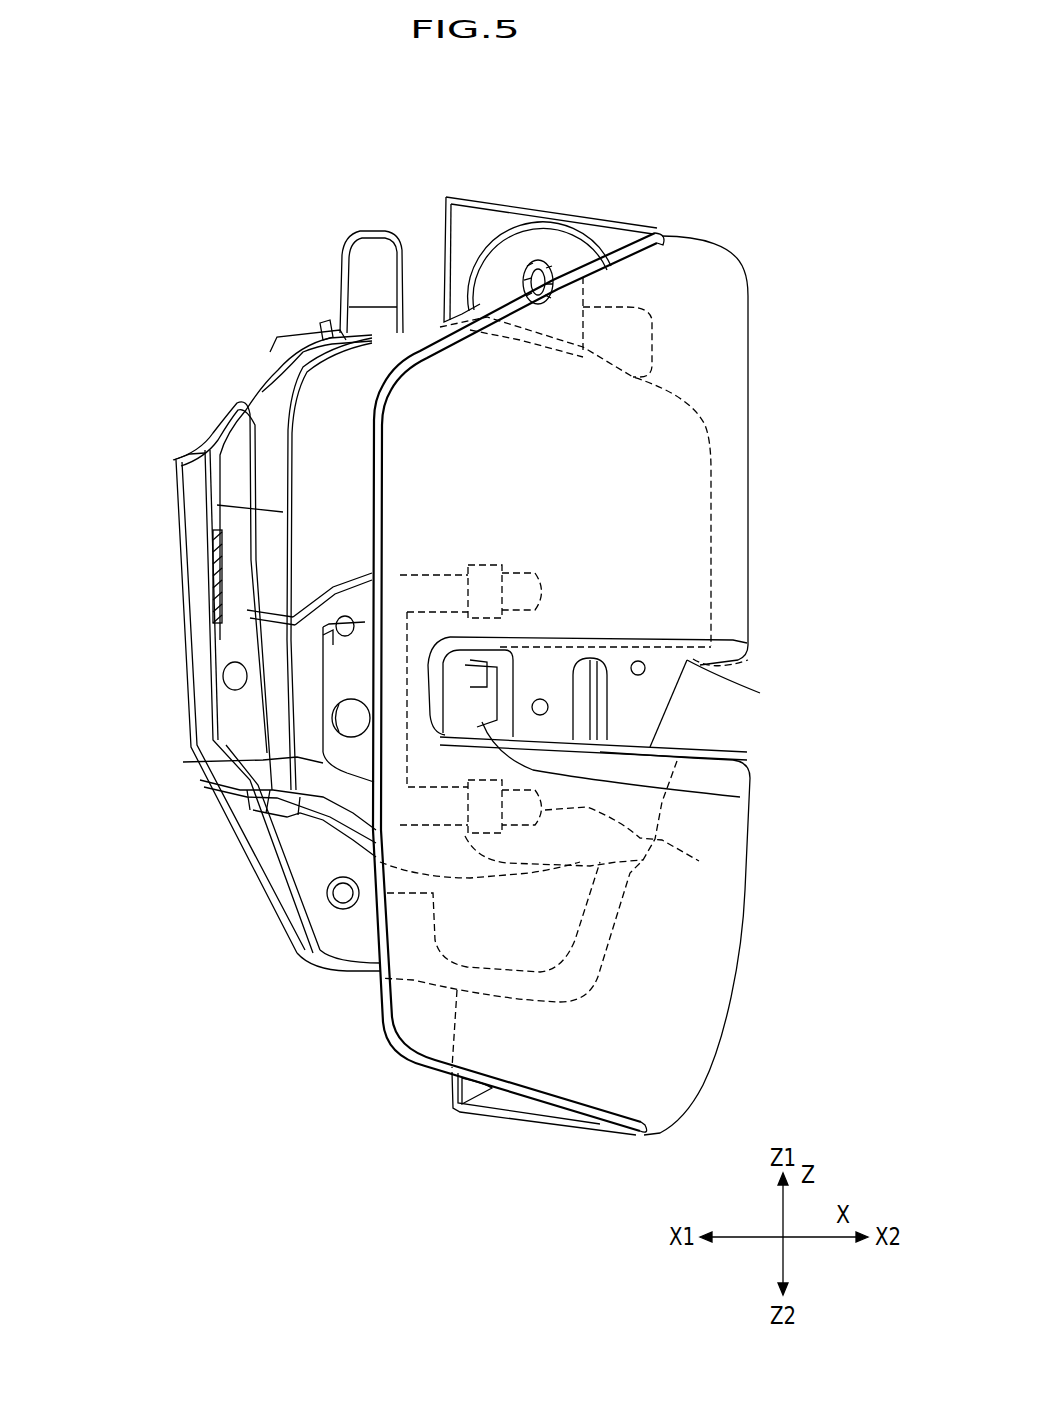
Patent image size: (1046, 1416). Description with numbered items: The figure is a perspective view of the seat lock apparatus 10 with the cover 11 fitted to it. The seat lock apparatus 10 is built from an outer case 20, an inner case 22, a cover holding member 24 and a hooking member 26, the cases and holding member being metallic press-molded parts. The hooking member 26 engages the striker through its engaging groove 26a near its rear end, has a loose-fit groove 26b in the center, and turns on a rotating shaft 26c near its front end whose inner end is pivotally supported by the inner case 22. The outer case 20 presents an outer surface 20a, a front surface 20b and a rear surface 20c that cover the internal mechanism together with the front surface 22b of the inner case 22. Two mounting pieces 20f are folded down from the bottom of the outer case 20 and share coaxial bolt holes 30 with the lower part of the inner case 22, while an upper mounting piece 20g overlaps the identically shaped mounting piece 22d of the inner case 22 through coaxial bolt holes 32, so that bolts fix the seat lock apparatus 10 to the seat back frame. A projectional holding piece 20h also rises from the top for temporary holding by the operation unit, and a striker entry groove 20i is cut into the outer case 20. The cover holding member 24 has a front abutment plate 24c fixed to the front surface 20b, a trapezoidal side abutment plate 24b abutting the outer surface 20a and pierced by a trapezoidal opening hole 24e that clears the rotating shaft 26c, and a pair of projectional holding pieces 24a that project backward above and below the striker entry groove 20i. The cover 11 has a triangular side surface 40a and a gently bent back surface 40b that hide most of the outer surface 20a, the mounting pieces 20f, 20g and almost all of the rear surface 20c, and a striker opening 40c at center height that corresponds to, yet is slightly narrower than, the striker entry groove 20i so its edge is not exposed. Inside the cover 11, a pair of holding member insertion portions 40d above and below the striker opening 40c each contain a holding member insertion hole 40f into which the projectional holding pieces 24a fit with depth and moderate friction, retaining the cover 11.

The seat lock apparatus 10 is at (262, 296).
The cover 11 is at (749, 241).
The outer case 20 is at (310, 483).
The outer surface 20a is at (227, 485).
The front surface 20b is at (235, 537).
The rear surface 20c is at (714, 496).
The mounting pieces 20f is at (293, 847).
The mounting piece 20g is at (563, 250).
The projectional holding piece 20h is at (362, 245).
The striker entry groove 20i is at (751, 657).
The inner case 22 is at (193, 555).
The front surface 22b is at (122, 578).
The mounting piece 22d is at (545, 227).
The cover holding member 24 is at (213, 650).
The projectional holding pieces 24a is at (545, 590).
The side abutment plate 24b is at (323, 607).
The front abutment plate 24c is at (141, 693).
The opening hole 24e is at (341, 618).
The hooking member 26 is at (647, 707).
The engaging groove 26a is at (640, 737).
The loose-fit groove 26b is at (640, 785).
The rotating shaft 26c is at (357, 723).
The bolt holes 30 is at (330, 900).
The bolt holes 32 is at (541, 260).
The side surface 40a is at (665, 992).
The back surface 40b is at (748, 359).
The striker opening 40c is at (677, 675).
The holding member insertion portions 40d is at (495, 557).
The holding member insertion hole 40f is at (487, 557).